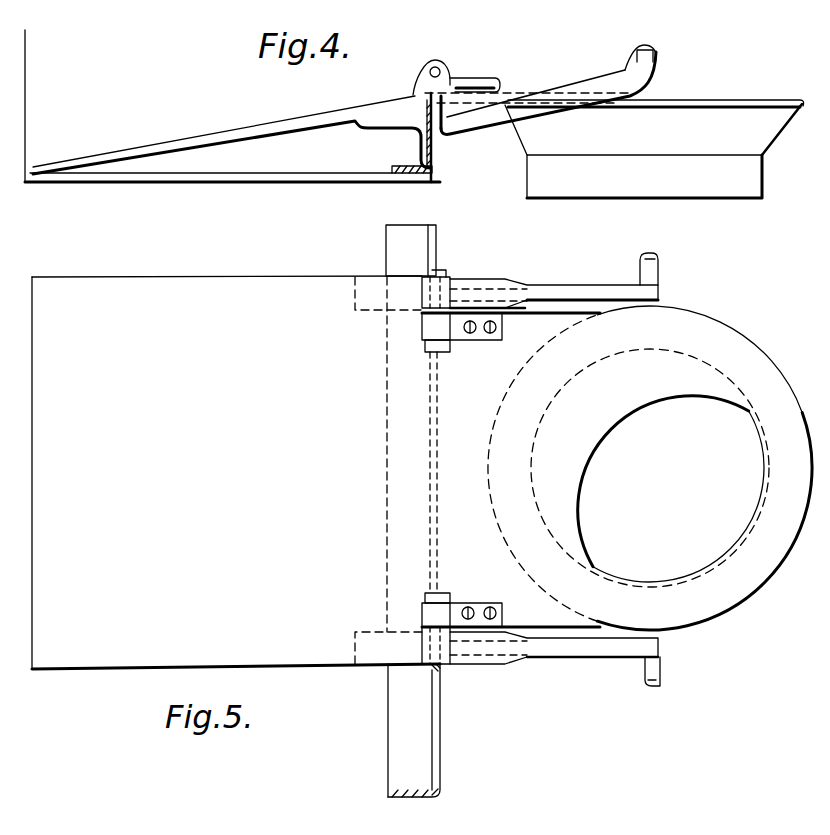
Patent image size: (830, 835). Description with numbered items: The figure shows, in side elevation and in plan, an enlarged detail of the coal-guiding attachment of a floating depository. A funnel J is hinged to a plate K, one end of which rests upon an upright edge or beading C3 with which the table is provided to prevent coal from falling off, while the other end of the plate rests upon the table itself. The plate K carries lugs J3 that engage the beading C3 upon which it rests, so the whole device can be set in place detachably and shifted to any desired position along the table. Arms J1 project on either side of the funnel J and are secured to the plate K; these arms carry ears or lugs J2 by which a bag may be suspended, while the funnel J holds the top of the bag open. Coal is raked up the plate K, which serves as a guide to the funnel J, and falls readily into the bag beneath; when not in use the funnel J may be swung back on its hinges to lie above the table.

In FIG. 4, the funnel J is at (700, 123).
In FIG. 5, the funnel J is at (703, 352).
In FIG. 4, the arms J1 is at (531, 107).
In FIG. 5, the arms J1 is at (542, 292).
In FIG. 4, the ears or lugs J2 is at (657, 48).
In FIG. 5, the ears or lugs J2 is at (650, 255).
In FIG. 4, the lugs J3 is at (570, 125).
In FIG. 4, the upright edge or beading C3 is at (424, 140).
In FIG. 5, the upright edge or beading C3 is at (415, 715).
In FIG. 4, the plate K is at (325, 118).
In FIG. 5, the plate K is at (316, 297).